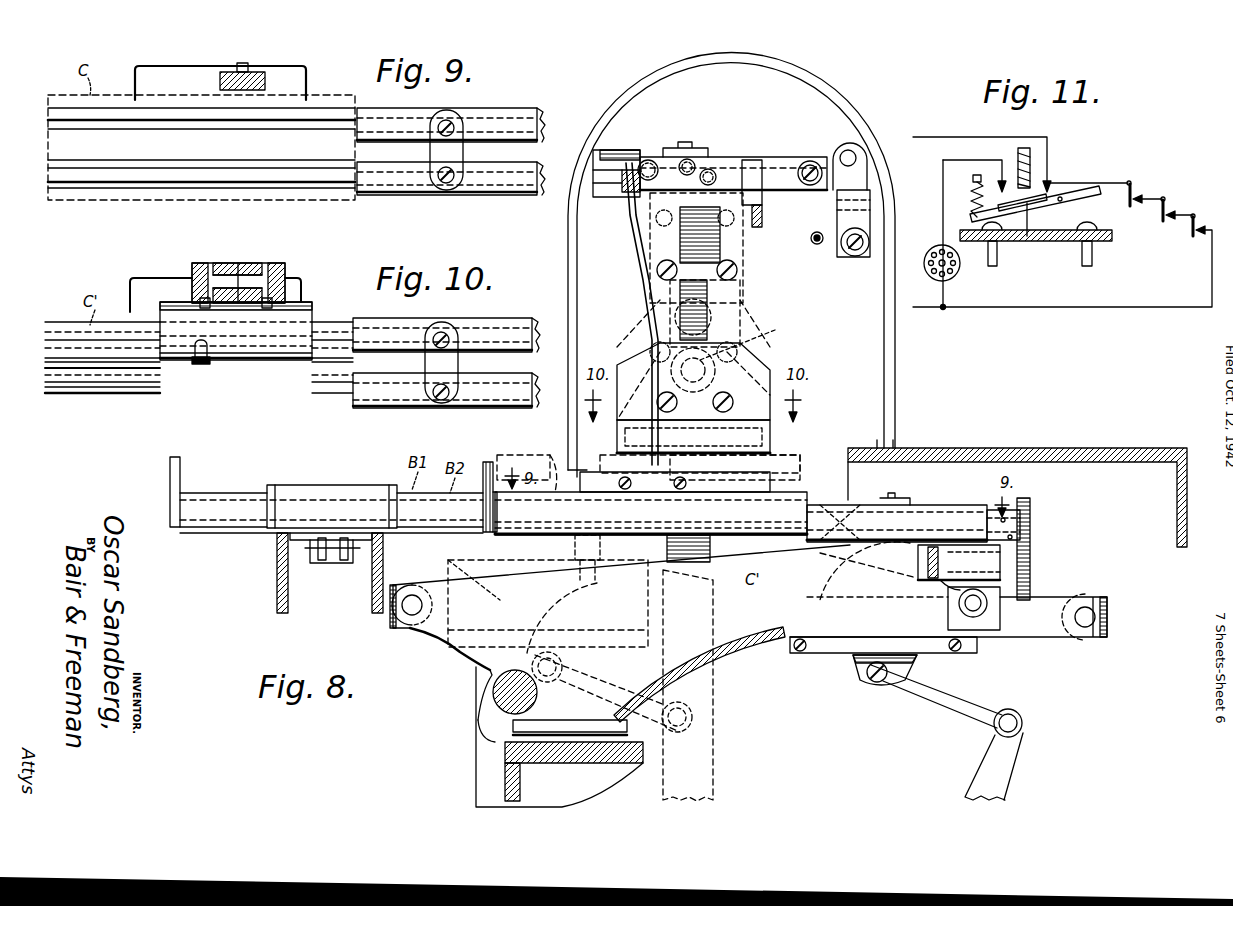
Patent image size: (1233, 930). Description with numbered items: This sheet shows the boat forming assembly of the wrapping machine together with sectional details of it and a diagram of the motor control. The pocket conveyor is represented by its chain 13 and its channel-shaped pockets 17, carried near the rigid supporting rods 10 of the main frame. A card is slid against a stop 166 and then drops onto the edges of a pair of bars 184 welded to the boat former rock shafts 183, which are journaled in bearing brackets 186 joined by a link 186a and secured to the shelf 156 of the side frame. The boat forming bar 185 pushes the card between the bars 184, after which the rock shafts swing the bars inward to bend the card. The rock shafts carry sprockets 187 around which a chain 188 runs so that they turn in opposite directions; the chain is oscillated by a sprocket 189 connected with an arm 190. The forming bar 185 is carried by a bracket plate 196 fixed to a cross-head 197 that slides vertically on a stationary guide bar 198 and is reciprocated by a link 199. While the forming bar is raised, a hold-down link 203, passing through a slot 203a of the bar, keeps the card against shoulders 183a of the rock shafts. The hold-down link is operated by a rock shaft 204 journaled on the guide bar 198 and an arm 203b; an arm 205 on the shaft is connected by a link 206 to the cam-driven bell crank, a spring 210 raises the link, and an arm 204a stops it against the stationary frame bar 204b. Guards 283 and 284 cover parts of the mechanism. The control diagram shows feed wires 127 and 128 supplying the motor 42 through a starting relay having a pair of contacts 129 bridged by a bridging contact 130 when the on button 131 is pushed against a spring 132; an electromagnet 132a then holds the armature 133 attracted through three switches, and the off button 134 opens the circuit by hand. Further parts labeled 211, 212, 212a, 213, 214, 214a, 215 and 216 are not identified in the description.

In FIG. 9, the stop 166 is at (166, 66).
In FIG. 10, the stop 166 is at (146, 278).
In FIG. 8, the stop 166 is at (558, 470).
In FIG. 9, the stationary guide bar 198 is at (258, 73).
In FIG. 10, the stationary guide bar 198 is at (238, 285).
In FIG. 8, the stationary guide bar 198 is at (742, 240).
In FIG. 9, the shoulders 183a is at (86, 128).
In FIG. 9, the bars 184 is at (302, 182).
In FIG. 10, the bars 184 is at (330, 326).
In FIG. 8, the bars 184 is at (808, 505).
In FIG. 9, the bearing brackets 186 is at (478, 148).
In FIG. 10, the bearing brackets 186 is at (487, 375).
In FIG. 8, the bearing brackets 186 is at (862, 512).
In FIG. 9, the link 186a is at (462, 186).
In FIG. 10, the link 186a is at (452, 335).
In FIG. 8, the link 186a is at (908, 498).
In FIG. 9, the boat former rock shafts 183 is at (540, 140).
In FIG. 10, the boat former rock shafts 183 is at (544, 367).
In FIG. 8, the boat former rock shafts 183 is at (925, 520).
In FIG. 10, the boat forming bar 185 is at (97, 355).
In FIG. 8, the boat forming bar 185 is at (651, 512).
In FIG. 10, the bracket plate 196 is at (265, 360).
In FIG. 8, the bracket plate 196 is at (768, 440).
In FIG. 10, the cross-head 197 is at (282, 265).
In FIG. 8, the cross-head 197 is at (740, 270).
In FIG. 10, the hold-down link 203 is at (200, 365).
In FIG. 8, the hold-down link 203 is at (643, 286).
In FIG. 10, the rock shaft 204 is at (196, 365).
In FIG. 8, the rock shaft 204 is at (762, 198).
In FIG. 10, the slot 203a is at (202, 420).
In FIG. 8, the slot 203a is at (600, 545).
In FIG. 11, the feed wire 127 is at (926, 137).
In FIG. 11, the contacts 129 is at (1002, 186).
In FIG. 11, the feed wire 128 is at (930, 307).
In FIG. 11, the electromagnet 132a is at (1043, 158).
In FIG. 11, the bridging contact 130 is at (1047, 206).
In FIG. 11, the armature 133 is at (1027, 240).
In FIG. 11, the spring 132 is at (973, 195).
In FIG. 11, the on button 131 is at (997, 266).
In FIG. 11, the off button 134 is at (1092, 265).
In FIG. 11, the motor 42 is at (959, 272).
In FIG. 8, the guard 283 is at (896, 390).
In FIG. 8, the guard 284 is at (962, 448).
In FIG. 8, the stationary frame bar 204b is at (732, 157).
In FIG. 8, the arm 203b is at (622, 155).
In FIG. 8, the arm 204a is at (770, 190).
In FIG. 8, the arm 205 is at (838, 212).
In FIG. 8, the link 206 is at (856, 257).
In FIG. 8, the spring 210 is at (816, 245).
In FIG. 8, the link 199 is at (760, 338).
In FIG. 8, the channel-shaped pockets 17 is at (306, 485).
In FIG. 8, the post 214a is at (488, 462).
In FIG. 8, the chain 13 is at (335, 565).
In FIG. 8, the sprockets 187 is at (1030, 500).
In FIG. 8, the chain 188 is at (1031, 540).
In FIG. 8, the arm 190 is at (930, 588).
In FIG. 8, the sprocket 189 is at (1010, 600).
In FIG. 8, the lever 212 is at (1030, 642).
In FIG. 8, the lever edge 212a is at (420, 640).
In FIG. 8, the pivot 211 is at (392, 625).
In FIG. 8, the bar 213 is at (828, 652).
In FIG. 8, the link 215 is at (925, 705).
In FIG. 8, the link 216 is at (1010, 762).
In FIG. 8, the rigid supporting rods 10 is at (492, 698).
In FIG. 8, the shelf 156 is at (643, 750).
In FIG. 8, the cam track 214 is at (495, 555).